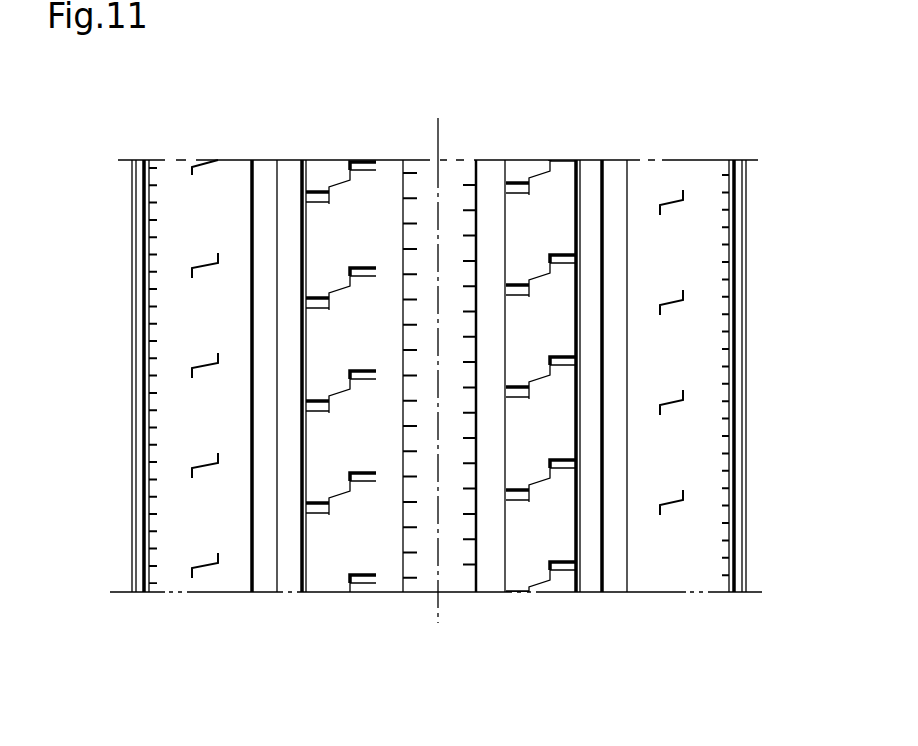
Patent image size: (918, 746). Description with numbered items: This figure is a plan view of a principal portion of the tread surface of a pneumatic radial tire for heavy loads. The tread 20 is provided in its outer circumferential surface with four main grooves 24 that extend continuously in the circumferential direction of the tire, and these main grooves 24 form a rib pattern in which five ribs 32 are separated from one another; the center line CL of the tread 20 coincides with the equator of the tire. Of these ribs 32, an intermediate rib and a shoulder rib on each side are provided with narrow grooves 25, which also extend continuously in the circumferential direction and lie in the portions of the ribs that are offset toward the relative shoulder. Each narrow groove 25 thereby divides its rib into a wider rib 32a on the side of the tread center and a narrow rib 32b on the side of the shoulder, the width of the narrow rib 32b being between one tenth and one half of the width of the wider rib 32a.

The tread 20 is at (760, 305).
The main grooves 24 is at (268, 157).
The narrow grooves 25 is at (142, 157).
The ribs 32 is at (743, 600).
The wider ribs 32a is at (192, 157).
The narrow ribs 32b is at (137, 158).